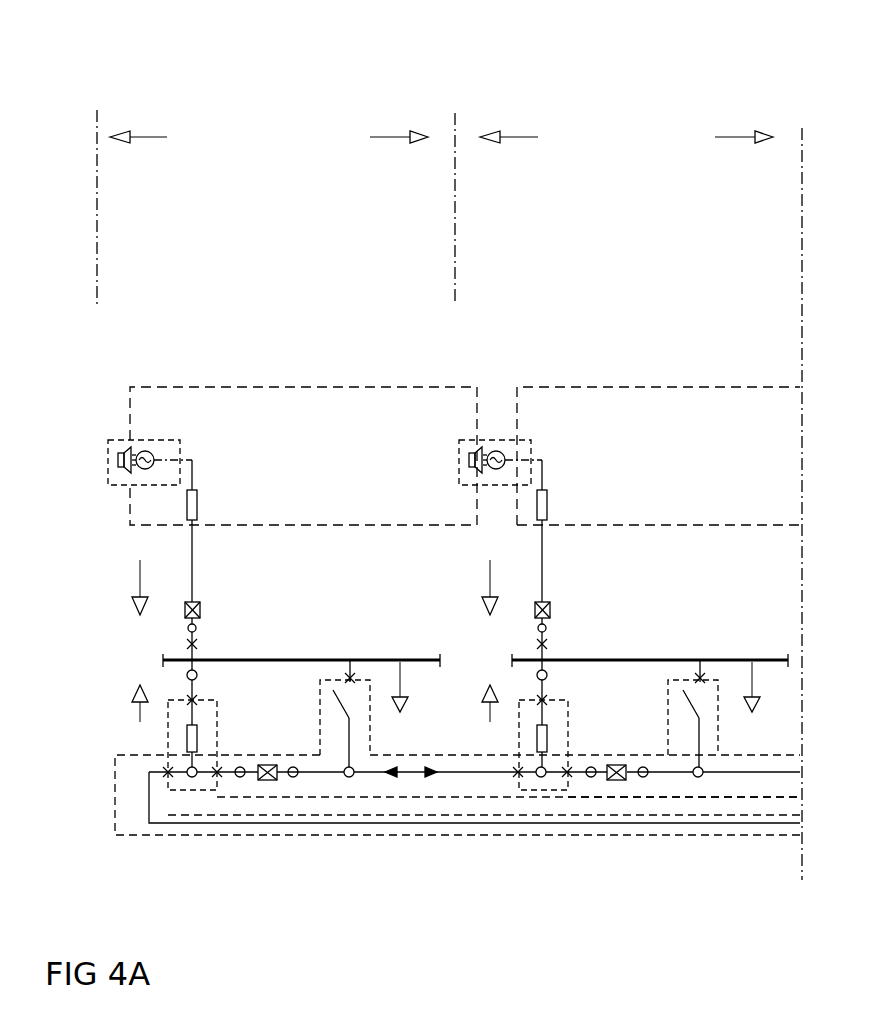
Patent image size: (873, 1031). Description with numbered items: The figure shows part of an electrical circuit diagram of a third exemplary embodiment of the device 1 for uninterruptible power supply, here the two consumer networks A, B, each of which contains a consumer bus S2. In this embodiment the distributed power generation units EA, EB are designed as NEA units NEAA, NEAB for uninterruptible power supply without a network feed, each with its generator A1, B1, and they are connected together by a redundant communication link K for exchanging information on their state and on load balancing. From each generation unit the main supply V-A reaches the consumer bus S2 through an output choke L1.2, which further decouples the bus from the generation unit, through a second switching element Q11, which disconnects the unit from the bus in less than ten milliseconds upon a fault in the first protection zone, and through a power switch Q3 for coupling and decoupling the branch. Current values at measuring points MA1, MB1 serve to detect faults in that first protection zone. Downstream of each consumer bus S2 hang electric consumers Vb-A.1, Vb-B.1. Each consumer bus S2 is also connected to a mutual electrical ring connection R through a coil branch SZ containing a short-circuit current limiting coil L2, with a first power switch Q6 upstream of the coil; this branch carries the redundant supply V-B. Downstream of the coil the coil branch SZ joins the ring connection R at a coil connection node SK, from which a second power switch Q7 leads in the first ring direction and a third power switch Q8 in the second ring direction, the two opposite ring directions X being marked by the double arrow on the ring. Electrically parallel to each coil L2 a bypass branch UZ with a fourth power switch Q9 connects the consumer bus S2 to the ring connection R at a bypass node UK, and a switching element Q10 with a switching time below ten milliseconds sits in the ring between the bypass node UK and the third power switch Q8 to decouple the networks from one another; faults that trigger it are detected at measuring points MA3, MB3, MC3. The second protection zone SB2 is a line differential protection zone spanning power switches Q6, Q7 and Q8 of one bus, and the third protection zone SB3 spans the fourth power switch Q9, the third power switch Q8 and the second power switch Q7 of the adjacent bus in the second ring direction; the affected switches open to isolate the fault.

The device 1 is at (77, 127).
The consumer network A is at (262, 207).
The consumer network B is at (628, 496).
The redundant communication link K is at (390, 387).
The distributed power generation unit EA is at (109, 437).
The distributed power generation unit EB is at (460, 437).
The NEA unit NEAA is at (108, 478).
The NEA unit NEAB is at (459, 478).
The generator A1 is at (165, 475).
The generator B1 is at (515, 475).
The output choke L1.2 is at (385, 505).
The main supply V-A is at (309, 597).
The redundant supply V-B is at (309, 698).
The second switching element Q11 is at (385, 614).
The power switch Q3 is at (380, 647).
The consumer bus S2 is at (479, 658).
The measuring point MA1 is at (187, 628).
The measuring point MB1 is at (537, 628).
The measuring point MA3 is at (197, 676).
The measuring point MB3 is at (547, 676).
The measuring point MC3 is at (591, 778).
The electric consumer Vb-A.1 is at (399, 699).
The electric consumer Vb-B.1 is at (749, 699).
The bypass branch UZ is at (349, 668).
The fourth power switch Q9 is at (528, 713).
The first power switch Q6 is at (379, 707).
The second protection zone SB2 is at (368, 745).
The short-circuit current limiting coil L2 is at (377, 738).
The coil branch SZ is at (200, 719).
The third protection zone SB3 is at (457, 795).
The ring connection R is at (259, 824).
The second power switch Q7 is at (332, 776).
The third power switch Q8 is at (383, 776).
The switching element Q10 is at (437, 782).
The coil connection node SK is at (192, 778).
The bypass node UK is at (349, 778).
The ring direction X is at (392, 778).